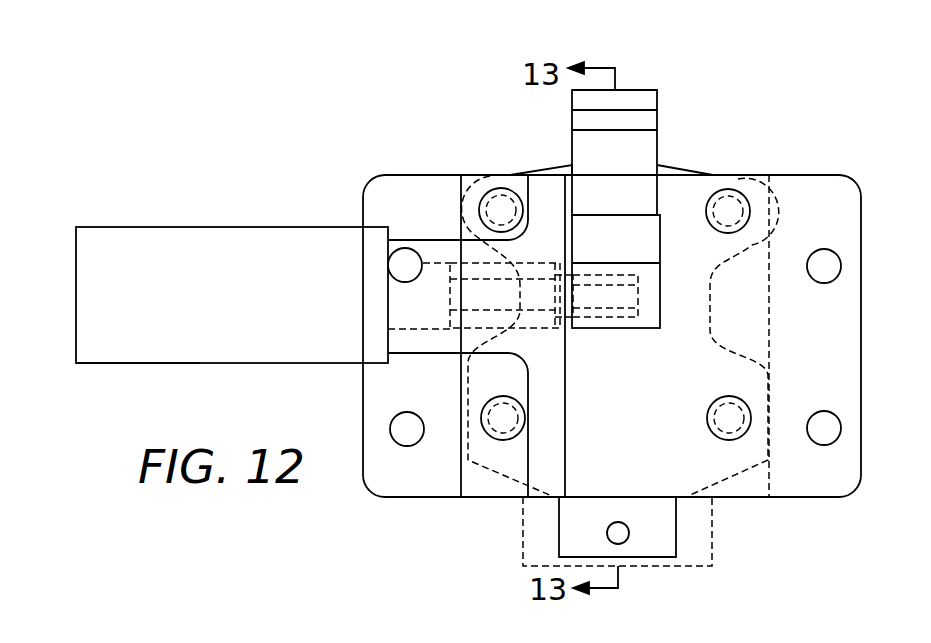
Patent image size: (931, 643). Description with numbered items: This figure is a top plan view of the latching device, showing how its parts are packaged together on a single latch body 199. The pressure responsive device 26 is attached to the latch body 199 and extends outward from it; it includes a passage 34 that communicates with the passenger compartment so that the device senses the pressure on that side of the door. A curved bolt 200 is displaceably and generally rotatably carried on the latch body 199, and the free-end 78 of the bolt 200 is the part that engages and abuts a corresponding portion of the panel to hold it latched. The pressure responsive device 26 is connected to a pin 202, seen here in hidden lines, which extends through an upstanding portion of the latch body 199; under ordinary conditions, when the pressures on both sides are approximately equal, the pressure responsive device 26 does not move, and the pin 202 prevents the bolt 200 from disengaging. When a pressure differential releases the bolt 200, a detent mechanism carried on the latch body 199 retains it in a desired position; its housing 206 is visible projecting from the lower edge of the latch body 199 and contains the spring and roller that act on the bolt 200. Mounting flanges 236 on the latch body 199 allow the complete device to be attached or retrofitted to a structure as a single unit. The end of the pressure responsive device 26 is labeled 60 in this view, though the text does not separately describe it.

The pressure responsive device 26 is at (172, 217).
The passage 34 is at (396, 272).
The arm end 60 is at (118, 365).
The free-end 78 is at (658, 95).
The latch body 199 is at (738, 519).
The bolt 200 is at (570, 140).
The pin 202 is at (608, 313).
The housing 206 is at (567, 515).
The mounting flanges 236 is at (395, 175).